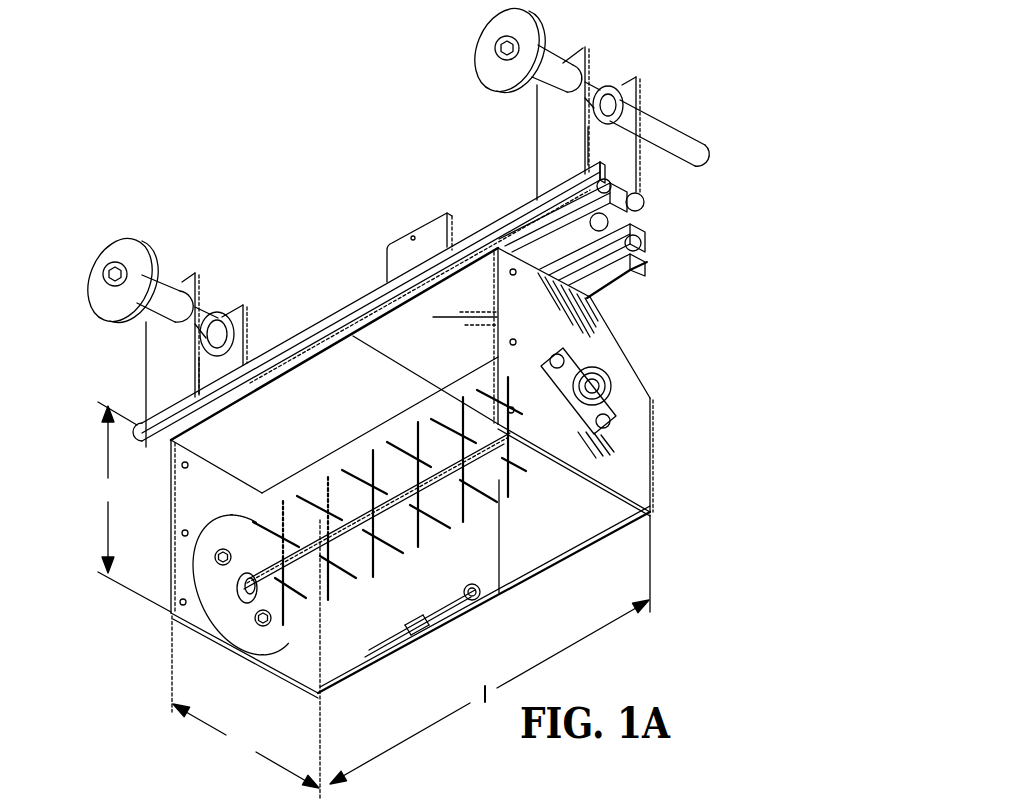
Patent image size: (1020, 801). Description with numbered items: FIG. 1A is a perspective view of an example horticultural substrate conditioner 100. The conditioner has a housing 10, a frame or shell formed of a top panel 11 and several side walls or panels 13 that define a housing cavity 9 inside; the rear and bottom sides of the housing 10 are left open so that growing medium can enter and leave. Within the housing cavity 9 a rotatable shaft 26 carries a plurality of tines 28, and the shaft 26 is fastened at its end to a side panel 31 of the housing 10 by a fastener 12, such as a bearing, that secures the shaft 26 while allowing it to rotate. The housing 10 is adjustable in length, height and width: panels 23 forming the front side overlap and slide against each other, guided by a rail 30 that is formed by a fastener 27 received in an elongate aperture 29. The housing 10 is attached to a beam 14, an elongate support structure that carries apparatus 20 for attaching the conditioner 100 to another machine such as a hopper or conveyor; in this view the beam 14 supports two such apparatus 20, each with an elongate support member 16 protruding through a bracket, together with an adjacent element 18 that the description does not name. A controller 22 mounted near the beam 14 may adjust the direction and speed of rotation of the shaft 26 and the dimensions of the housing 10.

The horticultural substrate conditioner 100 is at (210, 162).
The housing cavity 9 is at (192, 560).
The housing 10 is at (678, 457).
The top panel 11 is at (297, 380).
The fastener 12 is at (612, 404).
The side panel 13 is at (637, 483).
The beam 14 is at (643, 228).
The elongate support member 16 is at (684, 136).
The roller 18 is at (477, 66).
The apparatus 20 is at (172, 245).
The controller 22 is at (425, 222).
The front panel 23 is at (526, 455).
The rotatable shaft 26 is at (378, 492).
The fastener 27 is at (470, 584).
The tines 28 is at (327, 499).
The elongate aperture 29 is at (423, 641).
The rail 30 is at (455, 617).
The side panel 31 is at (643, 440).